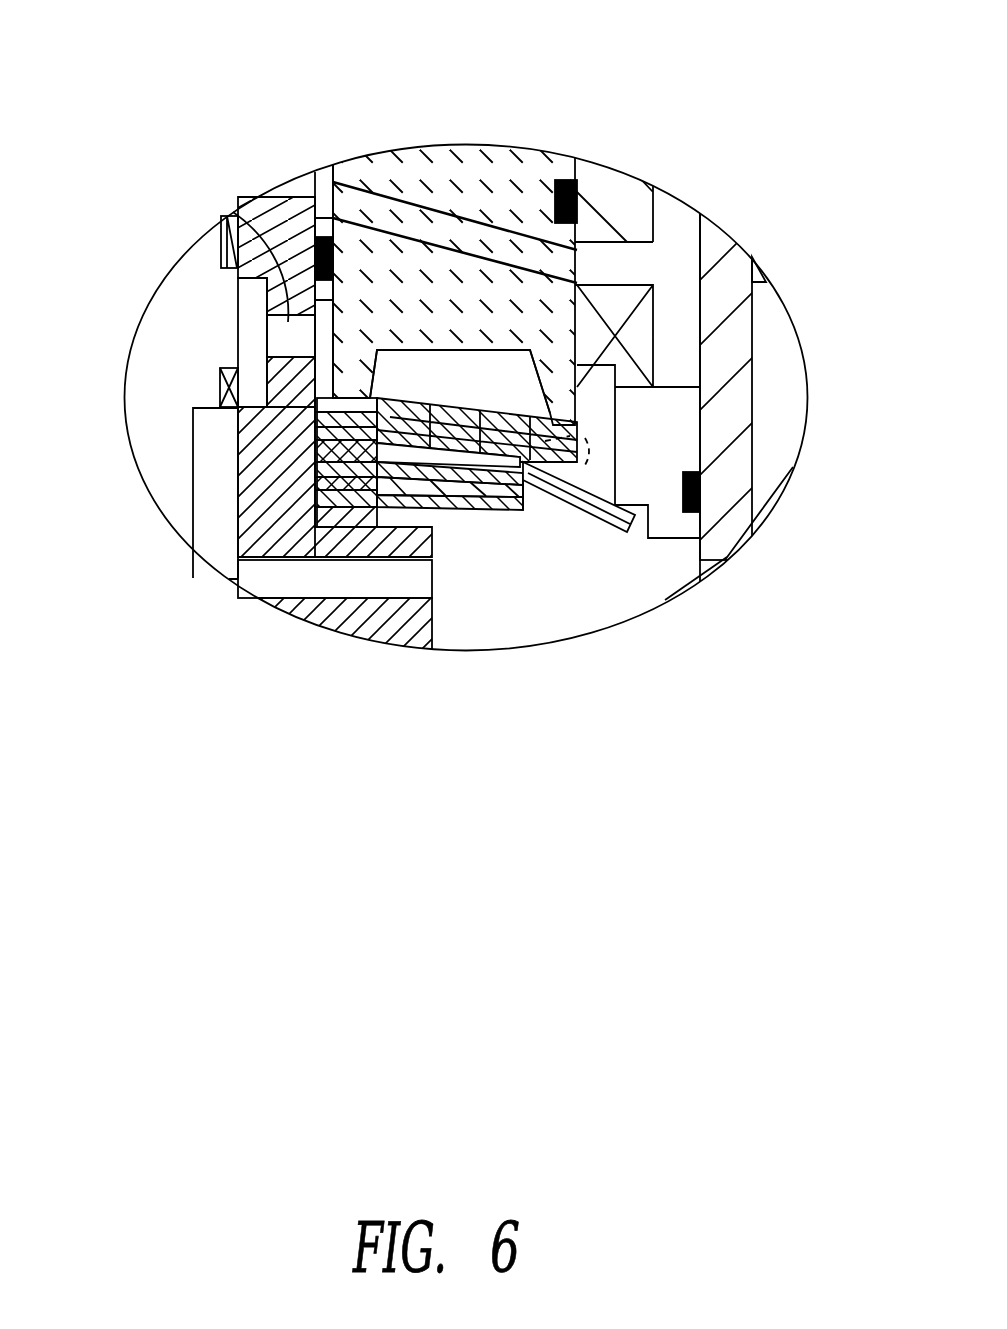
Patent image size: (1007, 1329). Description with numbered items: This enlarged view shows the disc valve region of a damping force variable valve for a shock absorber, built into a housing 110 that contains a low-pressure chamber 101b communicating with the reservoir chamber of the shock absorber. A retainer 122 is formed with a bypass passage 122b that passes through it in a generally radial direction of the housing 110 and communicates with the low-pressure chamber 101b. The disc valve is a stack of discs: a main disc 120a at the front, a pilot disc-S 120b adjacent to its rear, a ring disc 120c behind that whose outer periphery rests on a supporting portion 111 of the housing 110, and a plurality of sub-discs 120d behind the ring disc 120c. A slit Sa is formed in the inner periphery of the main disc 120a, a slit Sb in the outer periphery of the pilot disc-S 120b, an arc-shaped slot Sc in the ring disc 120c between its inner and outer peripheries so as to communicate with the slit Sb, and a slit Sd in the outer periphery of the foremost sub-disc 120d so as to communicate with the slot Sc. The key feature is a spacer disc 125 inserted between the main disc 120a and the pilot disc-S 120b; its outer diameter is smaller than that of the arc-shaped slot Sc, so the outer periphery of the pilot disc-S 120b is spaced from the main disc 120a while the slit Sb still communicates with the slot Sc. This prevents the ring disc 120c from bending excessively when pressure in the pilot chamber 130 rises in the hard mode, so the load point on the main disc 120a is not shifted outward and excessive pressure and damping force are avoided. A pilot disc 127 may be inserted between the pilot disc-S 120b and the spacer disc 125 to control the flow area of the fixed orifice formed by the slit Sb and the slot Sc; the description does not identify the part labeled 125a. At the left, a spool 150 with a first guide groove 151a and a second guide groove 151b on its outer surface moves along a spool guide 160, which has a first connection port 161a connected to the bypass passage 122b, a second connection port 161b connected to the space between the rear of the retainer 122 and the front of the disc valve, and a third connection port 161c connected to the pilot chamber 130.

The low-pressure chamber 101b is at (678, 205).
The housing 110 is at (757, 262).
The supporting portion 111 is at (690, 527).
The main disc 120a is at (287, 380).
The pilot disc-S 120b is at (303, 477).
The ring disc 120c is at (598, 497).
The sub-discs 120d is at (457, 507).
The retainer 122 is at (553, 325).
The bypass passage 122b is at (428, 235).
The spacer disc 125 is at (410, 398).
The plate stack 125a is at (437, 400).
The pilot disc 127 is at (470, 405).
The pilot chamber 130 is at (580, 592).
The spool 150 is at (187, 302).
The first guide groove 151a is at (220, 240).
The second guide groove 151b is at (210, 380).
The spool guide 160 is at (273, 563).
The first connection port 161a is at (293, 182).
The second connection port 161b is at (226, 219).
The third connection port 161c is at (333, 583).
The slit Sa is at (317, 432).
The slit Sb is at (540, 468).
The arc-shaped slot Sc is at (598, 497).
The slit Sd is at (520, 500).